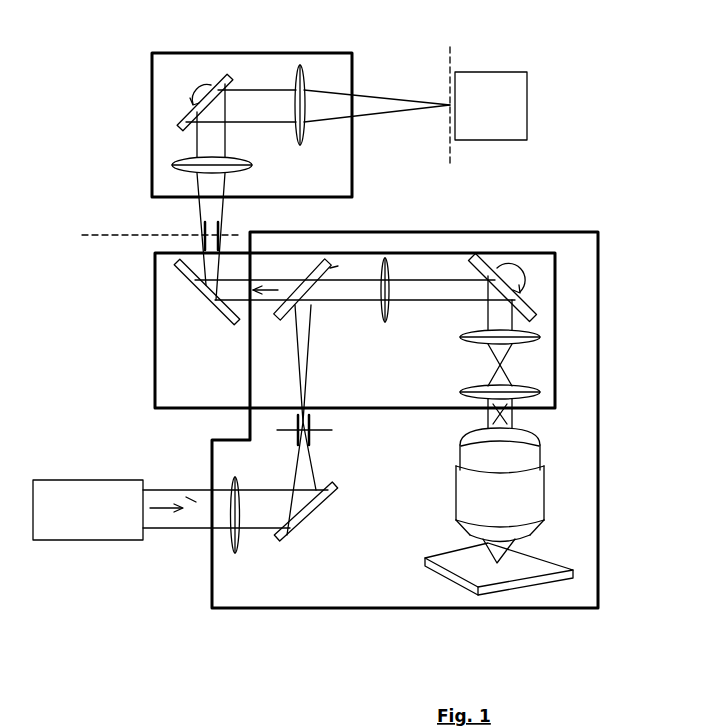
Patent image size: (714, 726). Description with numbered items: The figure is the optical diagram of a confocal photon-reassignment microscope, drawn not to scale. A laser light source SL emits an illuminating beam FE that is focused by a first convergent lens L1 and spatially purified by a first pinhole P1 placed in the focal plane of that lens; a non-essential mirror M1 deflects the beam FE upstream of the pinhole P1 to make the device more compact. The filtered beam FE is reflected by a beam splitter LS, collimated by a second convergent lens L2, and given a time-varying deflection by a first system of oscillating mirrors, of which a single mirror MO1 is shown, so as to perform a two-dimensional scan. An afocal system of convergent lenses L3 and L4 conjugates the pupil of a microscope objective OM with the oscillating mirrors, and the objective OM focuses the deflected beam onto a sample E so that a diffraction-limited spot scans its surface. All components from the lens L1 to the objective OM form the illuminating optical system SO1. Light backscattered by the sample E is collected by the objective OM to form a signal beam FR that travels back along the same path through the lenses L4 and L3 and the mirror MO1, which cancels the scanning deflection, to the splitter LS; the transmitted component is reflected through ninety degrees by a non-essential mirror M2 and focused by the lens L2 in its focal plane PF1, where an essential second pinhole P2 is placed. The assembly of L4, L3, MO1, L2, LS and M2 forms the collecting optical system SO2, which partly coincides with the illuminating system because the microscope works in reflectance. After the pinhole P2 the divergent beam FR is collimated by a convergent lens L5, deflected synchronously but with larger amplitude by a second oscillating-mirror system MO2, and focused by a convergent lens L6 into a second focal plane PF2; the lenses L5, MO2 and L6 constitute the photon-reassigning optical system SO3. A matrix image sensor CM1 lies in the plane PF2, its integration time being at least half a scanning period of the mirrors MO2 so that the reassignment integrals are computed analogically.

The third optical system SO3 is at (151, 90).
The second system of oscillating mirrors MO2 is at (178, 120).
The sixth convergent lens L6 is at (300, 64).
The fifth convergent lens L5 is at (252, 165).
The second focal plane PF2 is at (497, 72).
The matrix image sensor CM1 is at (527, 118).
The focal plane of lens L2 PF1 is at (110, 235).
The second pinhole P2 is at (203, 235).
The first optical system SO1 is at (398, 612).
The second optical system SO2 is at (154, 368).
The mirror M2 is at (199, 299).
The signal beam FR is at (303, 260).
The beam splitter LS is at (368, 234).
The second convergent lens L2 is at (385, 323).
The first system of oscillating mirrors MO1 is at (498, 258).
The third convergent lens L3 is at (462, 337).
The fourth convergent lens L4 is at (462, 392).
The microscope objective OM is at (525, 493).
The sample E is at (540, 556).
The light source SL is at (88, 530).
The illuminating beam FE is at (195, 501).
The first convergent lens L1 is at (238, 556).
The mirror M1 is at (302, 540).
The first pinhole P1 is at (318, 435).